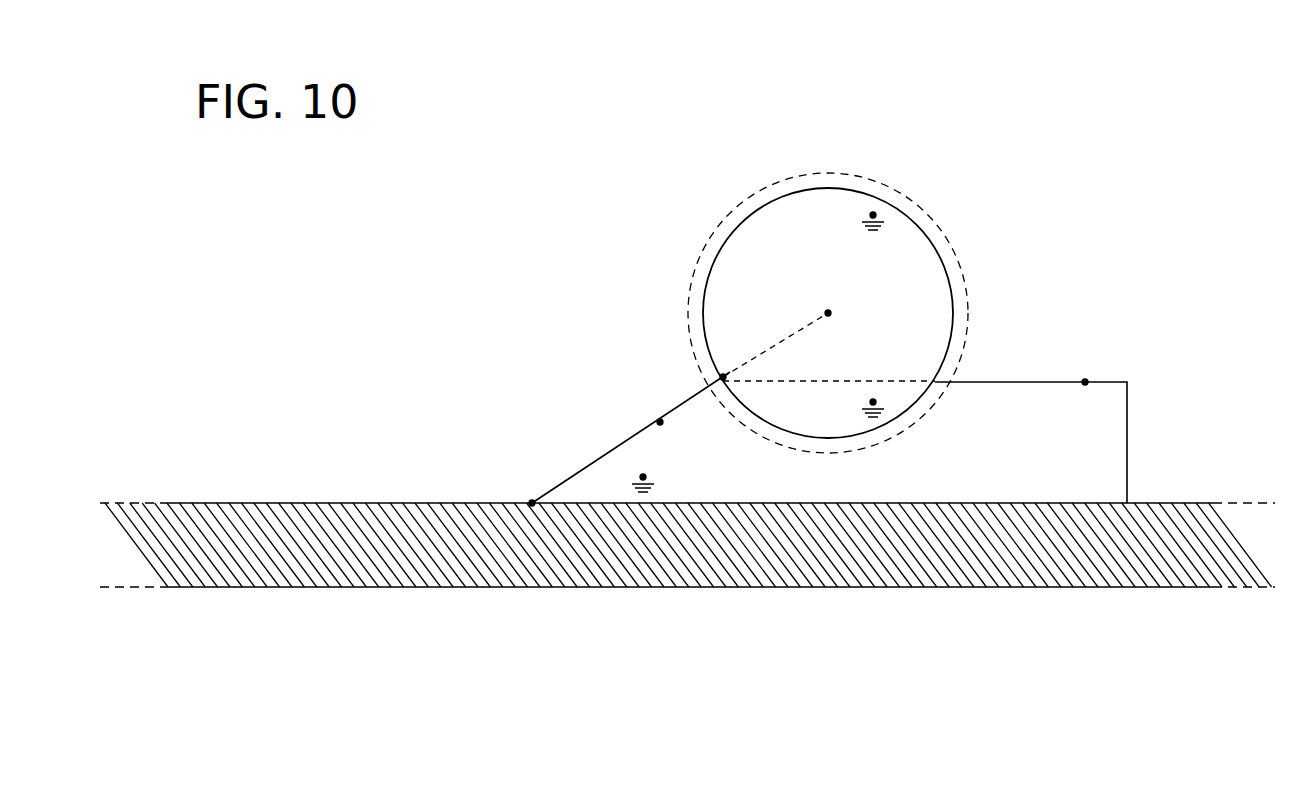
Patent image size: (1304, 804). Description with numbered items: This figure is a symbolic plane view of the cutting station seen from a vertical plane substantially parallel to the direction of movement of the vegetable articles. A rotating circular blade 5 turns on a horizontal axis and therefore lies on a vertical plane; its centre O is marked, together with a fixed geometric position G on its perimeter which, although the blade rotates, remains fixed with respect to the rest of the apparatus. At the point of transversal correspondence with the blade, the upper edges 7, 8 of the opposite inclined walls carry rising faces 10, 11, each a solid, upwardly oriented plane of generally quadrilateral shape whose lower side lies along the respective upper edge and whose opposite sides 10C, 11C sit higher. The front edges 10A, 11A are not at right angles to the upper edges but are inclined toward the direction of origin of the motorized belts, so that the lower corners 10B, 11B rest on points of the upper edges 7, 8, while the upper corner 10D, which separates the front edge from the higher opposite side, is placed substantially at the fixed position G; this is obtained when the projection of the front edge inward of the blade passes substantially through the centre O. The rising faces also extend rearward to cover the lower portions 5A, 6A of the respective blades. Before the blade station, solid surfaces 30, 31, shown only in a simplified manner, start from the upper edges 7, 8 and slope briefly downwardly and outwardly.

The rotating circular blade 5 is at (873, 213).
The rotation axis 5A, 6A is at (873, 400).
The contact surface 7, 8 is at (234, 503).
The inclined line 10, 11 is at (643, 477).
The first point 10A, 11A is at (660, 422).
The second point 10B, 11B is at (532, 503).
The third point 10C, 11C is at (1085, 382).
The upper corner of rising face 10D is at (698, 381).
The base plate 30, 31 is at (452, 557).
The fixed geometric position G is at (723, 375).
The centre of blade O is at (828, 313).